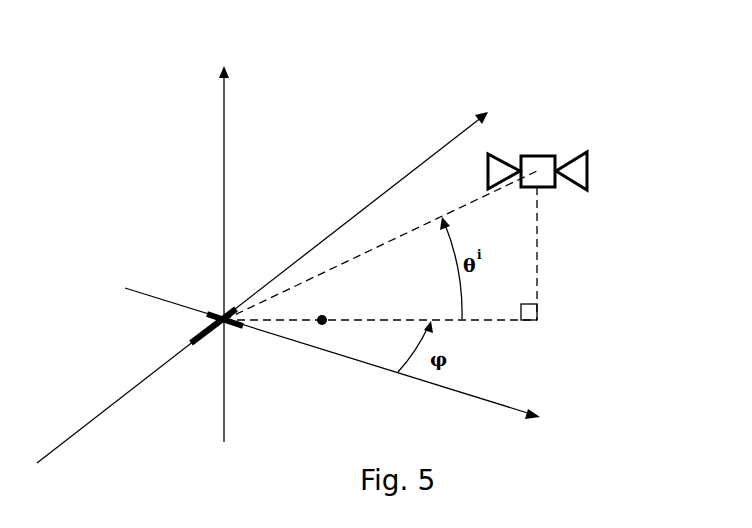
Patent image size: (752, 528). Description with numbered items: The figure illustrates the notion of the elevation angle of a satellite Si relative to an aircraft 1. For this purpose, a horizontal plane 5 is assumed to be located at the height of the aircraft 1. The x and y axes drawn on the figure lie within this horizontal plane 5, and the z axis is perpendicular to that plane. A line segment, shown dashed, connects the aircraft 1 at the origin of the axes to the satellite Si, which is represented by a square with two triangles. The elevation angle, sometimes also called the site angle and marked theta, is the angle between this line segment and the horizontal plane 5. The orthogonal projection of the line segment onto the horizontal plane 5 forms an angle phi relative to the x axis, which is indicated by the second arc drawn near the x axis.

The horizontal plane 5 is at (186, 265).
The aircraft 1 is at (196, 333).
The satellite Si is at (545, 154).